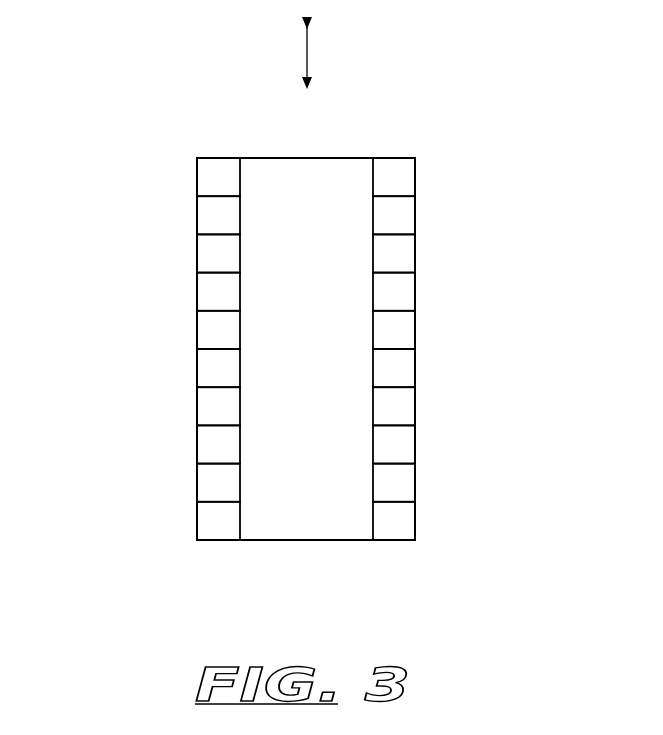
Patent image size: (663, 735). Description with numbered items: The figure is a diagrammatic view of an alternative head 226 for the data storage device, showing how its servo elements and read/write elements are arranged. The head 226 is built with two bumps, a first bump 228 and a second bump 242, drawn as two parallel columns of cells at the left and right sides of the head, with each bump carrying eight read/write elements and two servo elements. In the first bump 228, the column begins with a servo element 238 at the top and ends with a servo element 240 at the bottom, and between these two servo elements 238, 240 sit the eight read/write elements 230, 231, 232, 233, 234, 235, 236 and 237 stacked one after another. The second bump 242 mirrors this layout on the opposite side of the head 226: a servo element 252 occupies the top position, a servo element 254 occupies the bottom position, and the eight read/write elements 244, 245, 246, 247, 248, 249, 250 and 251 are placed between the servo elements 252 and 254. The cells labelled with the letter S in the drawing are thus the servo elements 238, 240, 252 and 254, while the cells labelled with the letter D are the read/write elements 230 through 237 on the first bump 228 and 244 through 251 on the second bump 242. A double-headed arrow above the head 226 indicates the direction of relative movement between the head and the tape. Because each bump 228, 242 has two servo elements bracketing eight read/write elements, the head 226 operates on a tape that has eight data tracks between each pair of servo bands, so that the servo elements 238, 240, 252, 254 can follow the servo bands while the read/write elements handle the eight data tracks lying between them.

The head 226 is at (302, 312).
The first bump 228 is at (245, 574).
The second bump 242 is at (393, 581).
The servo element 238 is at (197, 179).
The read/write element 230 is at (197, 217).
The read/write element 231 is at (197, 256).
The read/write element 232 is at (197, 294).
The read/write element 233 is at (197, 332).
The read/write element 234 is at (197, 370).
The read/write element 235 is at (197, 408).
The read/write element 236 is at (197, 446).
The read/write element 237 is at (197, 485).
The servo element 240 is at (197, 523).
The servo element 252 is at (415, 179).
The read/write element 244 is at (415, 217).
The read/write element 245 is at (415, 256).
The read/write element 246 is at (415, 294).
The read/write element 247 is at (415, 332).
The read/write element 248 is at (415, 370).
The read/write element 249 is at (415, 408).
The read/write element 250 is at (415, 446).
The read/write element 251 is at (415, 485).
The servo element 254 is at (415, 523).